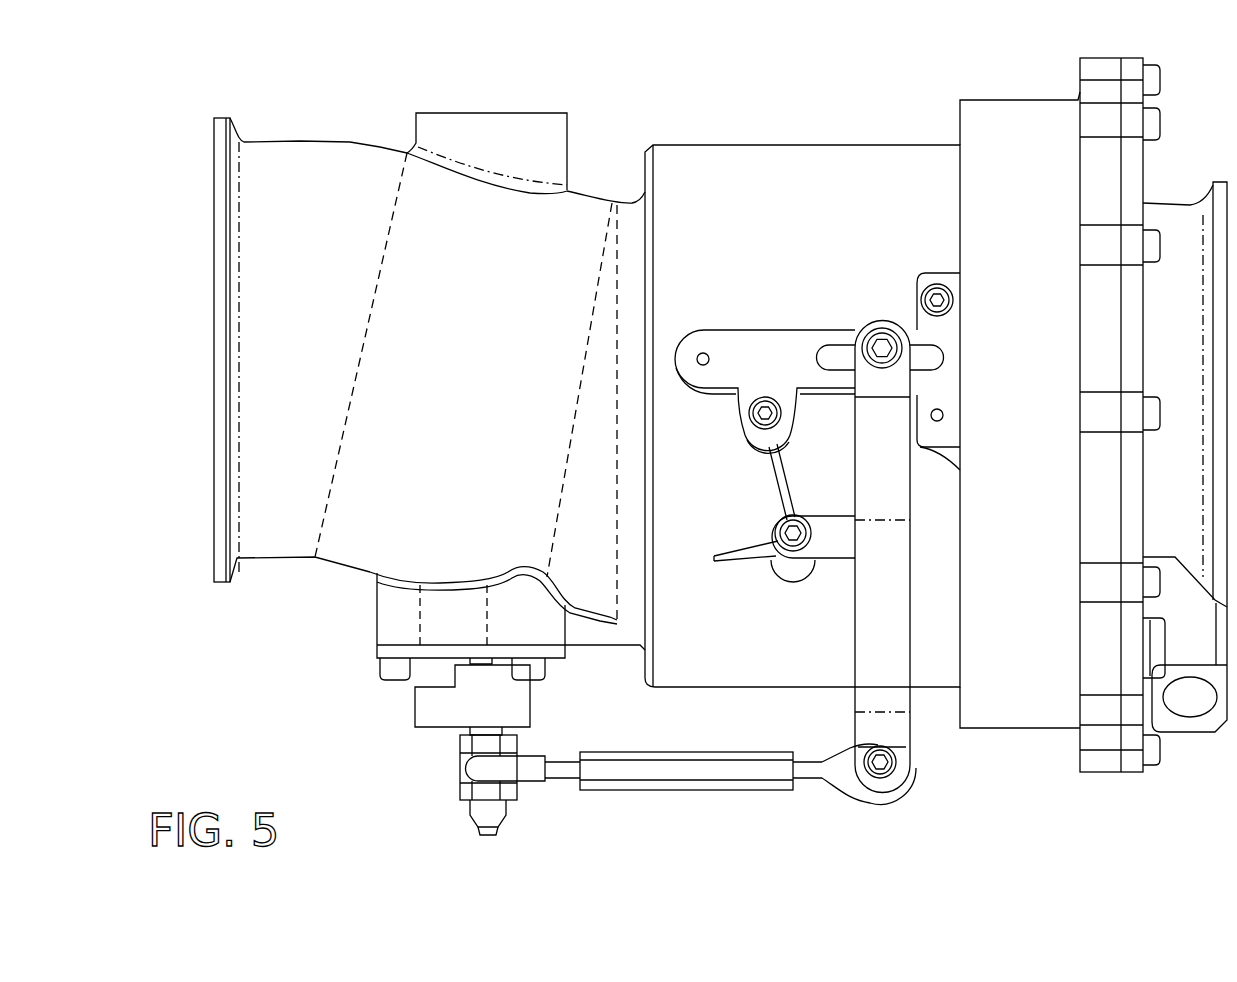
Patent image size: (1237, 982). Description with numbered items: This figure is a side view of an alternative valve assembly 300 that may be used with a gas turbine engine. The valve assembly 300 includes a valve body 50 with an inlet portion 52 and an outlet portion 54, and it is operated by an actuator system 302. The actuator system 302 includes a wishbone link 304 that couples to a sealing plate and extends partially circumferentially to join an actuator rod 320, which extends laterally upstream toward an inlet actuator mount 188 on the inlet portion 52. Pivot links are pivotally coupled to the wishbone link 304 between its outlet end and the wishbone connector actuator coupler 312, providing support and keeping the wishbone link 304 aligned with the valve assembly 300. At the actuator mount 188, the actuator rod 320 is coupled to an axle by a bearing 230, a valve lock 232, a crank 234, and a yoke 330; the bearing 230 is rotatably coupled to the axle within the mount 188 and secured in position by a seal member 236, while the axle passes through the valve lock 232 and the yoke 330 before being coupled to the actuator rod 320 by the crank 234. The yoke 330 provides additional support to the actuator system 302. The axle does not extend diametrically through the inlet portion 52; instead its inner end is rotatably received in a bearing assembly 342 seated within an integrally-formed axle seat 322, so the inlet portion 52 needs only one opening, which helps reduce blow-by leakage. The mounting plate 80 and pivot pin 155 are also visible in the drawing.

The valve assembly 300 is at (263, 85).
The inlet portion 52 is at (355, 135).
The bearing assembly 342 is at (490, 110).
The axle seat 322 is at (560, 110).
The valve body 50 is at (717, 140).
The outlet portion 54 is at (810, 137).
The mounting plate 80 is at (828, 305).
The pivot pin 155 is at (889, 320).
The wishbone link 304 is at (855, 658).
The wishbone connector actuator coupler 312 is at (890, 800).
The actuator system 302 is at (700, 808).
The actuator rod 320 is at (712, 752).
The seal member 236 is at (565, 650).
The valve lock 232 is at (530, 680).
The yoke 330 is at (412, 710).
The bearing 230 is at (425, 660).
The actuator mount 188 is at (415, 750).
The crank 234 is at (515, 800).